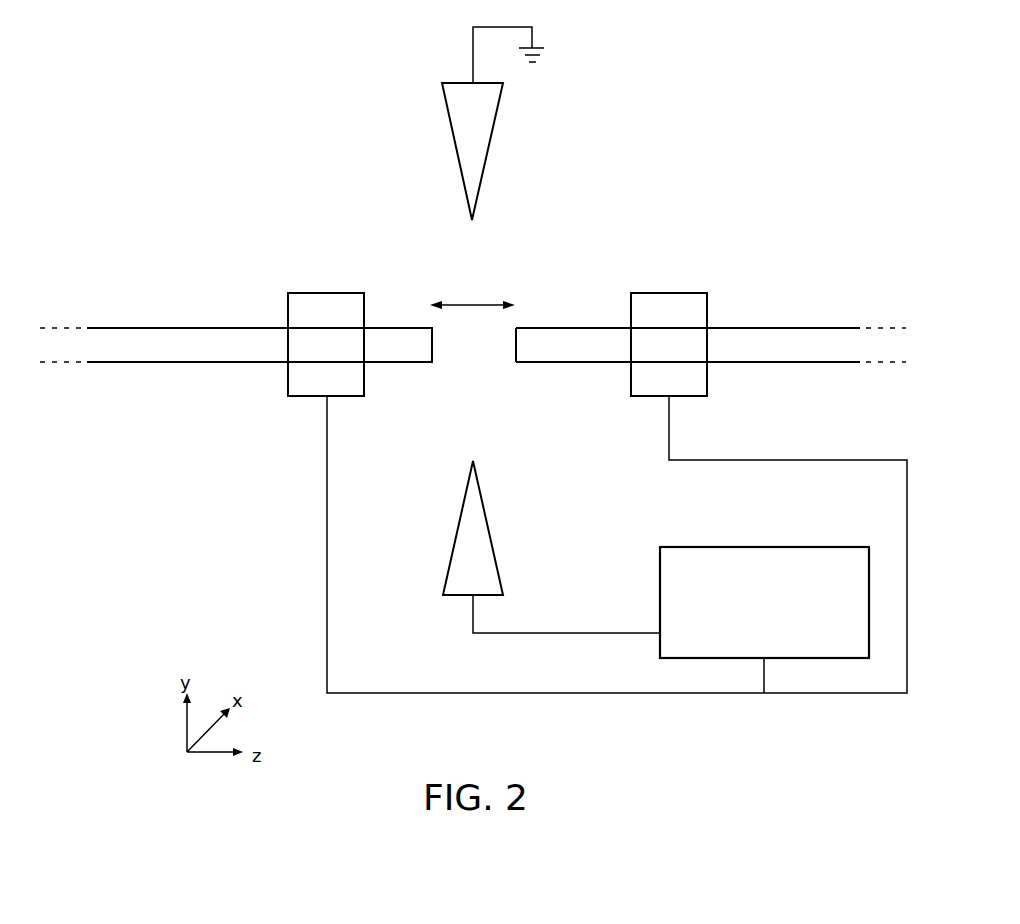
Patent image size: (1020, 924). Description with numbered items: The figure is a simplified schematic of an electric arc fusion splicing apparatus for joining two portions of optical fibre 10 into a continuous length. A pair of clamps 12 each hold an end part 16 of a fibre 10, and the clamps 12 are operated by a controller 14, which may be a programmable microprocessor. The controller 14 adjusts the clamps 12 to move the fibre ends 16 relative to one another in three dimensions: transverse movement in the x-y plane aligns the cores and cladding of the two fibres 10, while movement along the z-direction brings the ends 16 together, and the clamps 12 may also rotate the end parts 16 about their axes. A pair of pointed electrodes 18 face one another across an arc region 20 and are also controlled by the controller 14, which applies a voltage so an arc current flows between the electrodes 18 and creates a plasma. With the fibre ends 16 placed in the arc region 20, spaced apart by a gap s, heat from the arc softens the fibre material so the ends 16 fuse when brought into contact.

The optical fibre 10 is at (207, 345).
The clamp 12 is at (328, 292).
The controller 14 is at (782, 619).
The end part 16 is at (387, 363).
The pointed electrode 18 is at (493, 127).
The arc region 20 is at (489, 359).